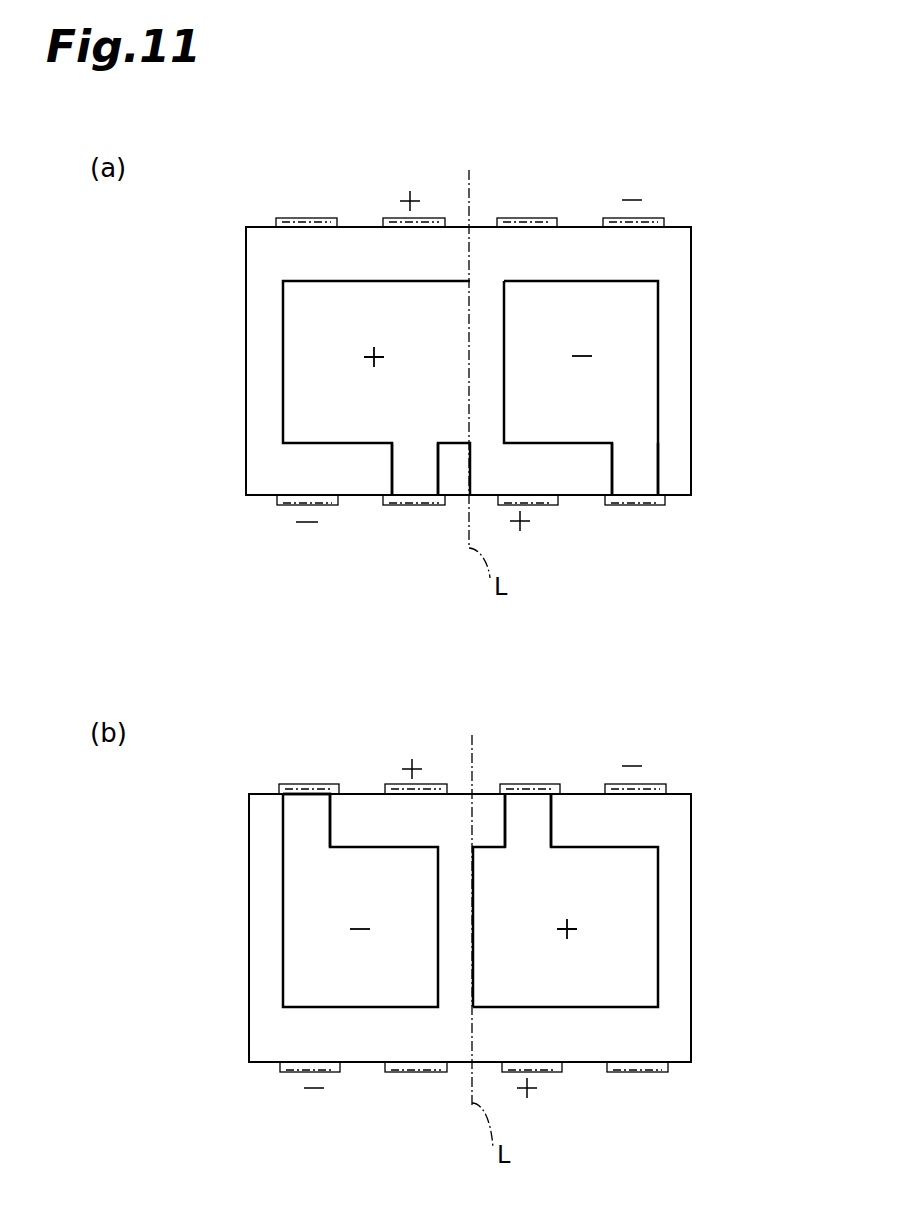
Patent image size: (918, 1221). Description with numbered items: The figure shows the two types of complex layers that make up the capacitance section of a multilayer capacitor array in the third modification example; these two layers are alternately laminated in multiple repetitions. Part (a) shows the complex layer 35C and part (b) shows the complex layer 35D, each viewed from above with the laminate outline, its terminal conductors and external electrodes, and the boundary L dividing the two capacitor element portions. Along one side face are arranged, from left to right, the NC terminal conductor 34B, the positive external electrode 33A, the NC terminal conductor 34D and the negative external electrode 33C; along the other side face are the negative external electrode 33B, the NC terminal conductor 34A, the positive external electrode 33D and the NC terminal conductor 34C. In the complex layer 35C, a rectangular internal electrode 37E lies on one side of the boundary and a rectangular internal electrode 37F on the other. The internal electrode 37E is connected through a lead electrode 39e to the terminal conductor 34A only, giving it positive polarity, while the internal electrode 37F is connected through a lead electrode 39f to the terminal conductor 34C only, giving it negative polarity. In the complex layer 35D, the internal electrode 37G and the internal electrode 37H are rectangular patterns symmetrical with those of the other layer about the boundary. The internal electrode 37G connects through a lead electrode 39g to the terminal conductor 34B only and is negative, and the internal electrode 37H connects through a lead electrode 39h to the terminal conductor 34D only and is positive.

The complex layer 35C is at (748, 201).
The complex layer 35D is at (748, 769).
The internal electrode 37E is at (298, 352).
The internal electrode 37F is at (643, 352).
The internal electrode 37G is at (300, 937).
The internal electrode 37H is at (643, 935).
The lead electrode 39e is at (410, 470).
The lead electrode 39f is at (640, 467).
The lead electrode 39g is at (302, 818).
The lead electrode 39h is at (536, 812).
The external electrode 33A is at (394, 216).
The external electrode 33B is at (286, 507).
The external electrode 33C is at (655, 216).
The external electrode 33D is at (549, 507).
The terminal conductor 34A is at (395, 507).
The terminal conductor 34B is at (292, 216).
The terminal conductor 34C is at (660, 1074).
The terminal conductor 34D is at (550, 216).